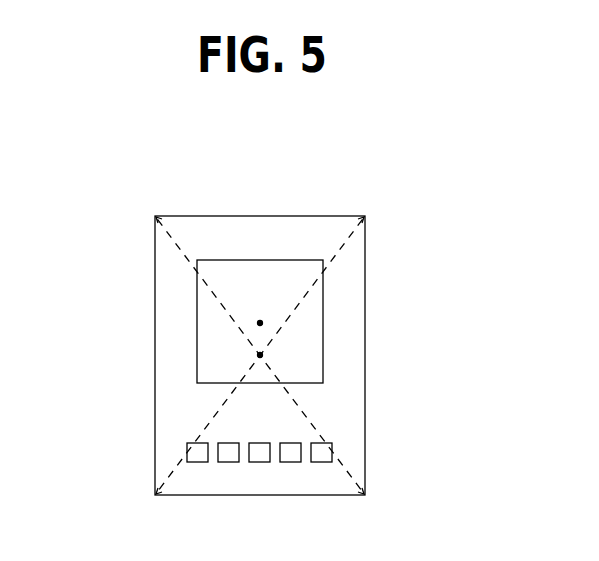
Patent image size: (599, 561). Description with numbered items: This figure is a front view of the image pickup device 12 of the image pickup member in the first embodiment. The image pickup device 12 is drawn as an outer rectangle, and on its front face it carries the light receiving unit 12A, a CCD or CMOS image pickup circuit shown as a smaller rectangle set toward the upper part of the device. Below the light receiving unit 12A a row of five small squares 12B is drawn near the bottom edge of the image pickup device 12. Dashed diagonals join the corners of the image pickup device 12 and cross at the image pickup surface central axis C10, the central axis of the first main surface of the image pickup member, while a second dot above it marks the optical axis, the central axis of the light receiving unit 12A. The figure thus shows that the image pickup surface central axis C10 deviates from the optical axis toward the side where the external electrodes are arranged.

The image pickup device 12 is at (313, 216).
The light receiving unit 12A is at (196, 296).
The operation buttons region 12B is at (197, 462).
The image pickup surface central axis C10 is at (262, 356).